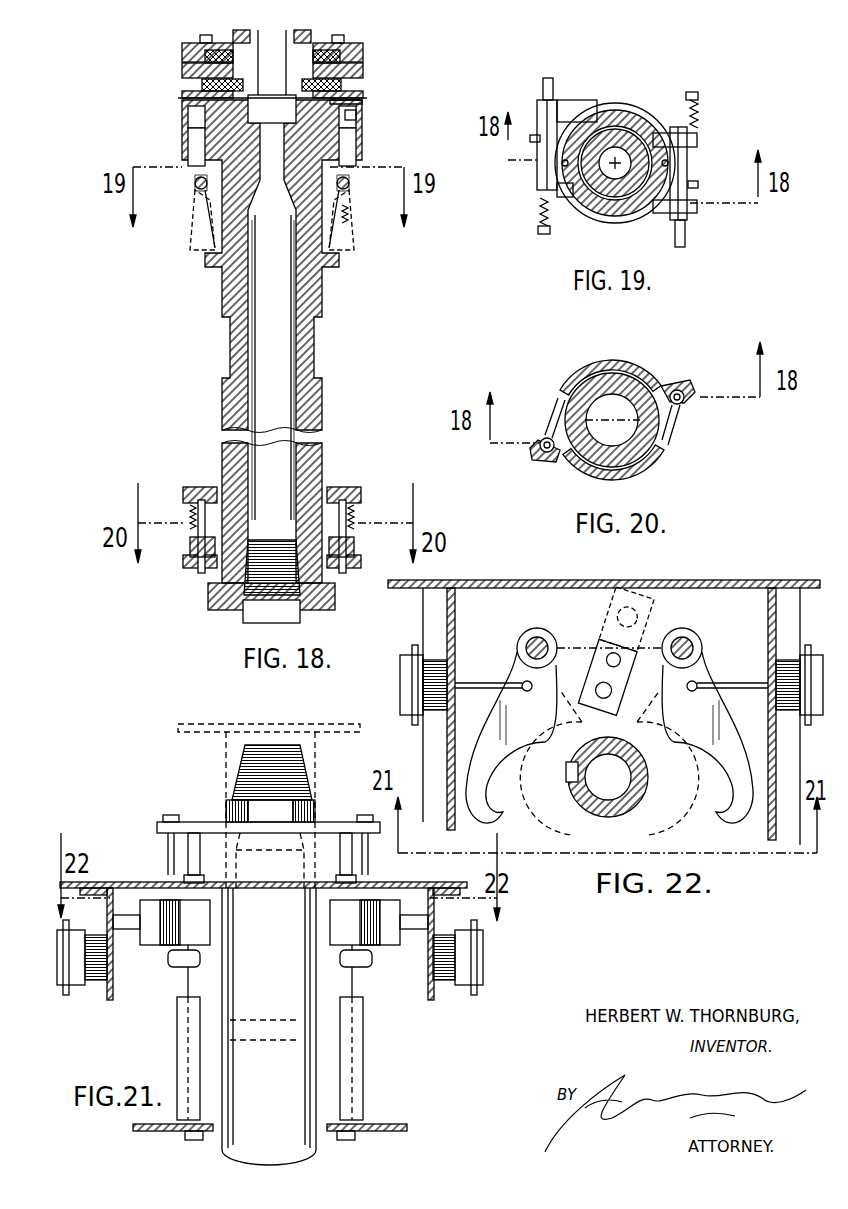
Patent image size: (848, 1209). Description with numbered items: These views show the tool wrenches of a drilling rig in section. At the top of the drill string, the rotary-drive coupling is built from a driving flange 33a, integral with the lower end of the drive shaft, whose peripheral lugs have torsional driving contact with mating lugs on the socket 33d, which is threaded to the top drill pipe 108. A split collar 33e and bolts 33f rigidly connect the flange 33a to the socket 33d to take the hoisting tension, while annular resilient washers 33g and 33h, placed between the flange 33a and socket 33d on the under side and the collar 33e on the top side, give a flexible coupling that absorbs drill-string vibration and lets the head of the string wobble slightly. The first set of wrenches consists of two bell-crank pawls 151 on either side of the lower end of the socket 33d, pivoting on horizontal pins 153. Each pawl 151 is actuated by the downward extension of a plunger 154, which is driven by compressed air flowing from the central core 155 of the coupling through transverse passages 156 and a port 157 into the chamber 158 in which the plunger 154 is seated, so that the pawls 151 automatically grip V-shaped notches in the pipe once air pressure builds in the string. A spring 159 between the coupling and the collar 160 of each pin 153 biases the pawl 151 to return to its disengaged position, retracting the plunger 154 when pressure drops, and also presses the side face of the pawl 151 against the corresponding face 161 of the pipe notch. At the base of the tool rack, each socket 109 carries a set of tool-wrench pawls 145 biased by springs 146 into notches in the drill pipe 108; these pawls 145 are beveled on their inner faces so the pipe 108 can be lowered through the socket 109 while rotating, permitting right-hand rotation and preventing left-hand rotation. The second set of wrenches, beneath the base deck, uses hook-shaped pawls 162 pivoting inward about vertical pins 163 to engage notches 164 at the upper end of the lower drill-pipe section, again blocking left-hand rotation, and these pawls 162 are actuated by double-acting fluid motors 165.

In FIG. 18, the driving flange 33a is at (182, 70).
In FIG. 18, the socket 33d is at (188, 118).
In FIG. 19, the socket 33d is at (600, 86).
In FIG. 18, the split collar 33e is at (182, 50).
In FIG. 18, the bolts 33f is at (203, 37).
In FIG. 18, the annular resilient washer 33g is at (365, 93).
In FIG. 18, the annular resilient washer 33h is at (342, 58).
In FIG. 18, the drill pipe 108 is at (222, 345).
In FIG. 19, the drill pipe 108 is at (632, 117).
In FIG. 20, the drill pipe 108 is at (640, 392).
In FIG. 22, the drill pipe 108 is at (617, 812).
In FIG. 21, the drill pipe 108 is at (269, 1026).
In FIG. 18, the socket 109 is at (358, 503).
In FIG. 20, the socket 109 is at (613, 358).
In FIG. 18, the tool-wrench pawls 145 is at (190, 549).
In FIG. 20, the tool-wrench pawls 145 is at (565, 428).
In FIG. 18, the springs 146 is at (193, 530).
In FIG. 20, the springs 146 is at (545, 445).
In FIG. 18, the pawls 151 is at (212, 235).
In FIG. 19, the pawls 151 is at (540, 150).
In FIG. 18, the horizontal pins 153 is at (200, 183).
In FIG. 19, the horizontal pins 153 is at (688, 233).
In FIG. 18, the plunger 154 is at (197, 146).
In FIG. 18, the central core 155 is at (270, 78).
In FIG. 18, the transverse passages 156 is at (185, 88).
In FIG. 18, the port 157 is at (352, 104).
In FIG. 18, the chamber 158 is at (356, 115).
In FIG. 18, the spring 159 is at (350, 216).
In FIG. 19, the spring 159 is at (698, 118).
In FIG. 19, the collar 160 is at (700, 103).
In FIG. 19, the face 161 is at (565, 165).
In FIG. 22, the hook-shaped pawls 162 is at (486, 780).
In FIG. 21, the hook-shaped pawls 162 is at (158, 945).
In FIG. 22, the vertical pins 163 is at (537, 640).
In FIG. 22, the notches 164 is at (585, 790).
In FIG. 22, the double-acting fluid motors 165 is at (405, 665).
In FIG. 21, the double-acting fluid motors 165 is at (72, 1003).